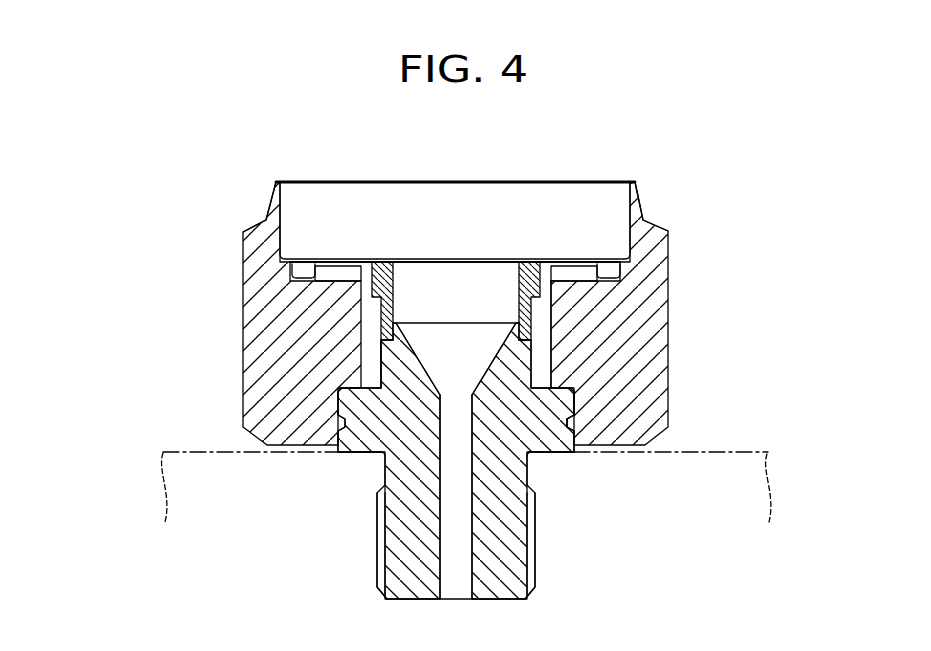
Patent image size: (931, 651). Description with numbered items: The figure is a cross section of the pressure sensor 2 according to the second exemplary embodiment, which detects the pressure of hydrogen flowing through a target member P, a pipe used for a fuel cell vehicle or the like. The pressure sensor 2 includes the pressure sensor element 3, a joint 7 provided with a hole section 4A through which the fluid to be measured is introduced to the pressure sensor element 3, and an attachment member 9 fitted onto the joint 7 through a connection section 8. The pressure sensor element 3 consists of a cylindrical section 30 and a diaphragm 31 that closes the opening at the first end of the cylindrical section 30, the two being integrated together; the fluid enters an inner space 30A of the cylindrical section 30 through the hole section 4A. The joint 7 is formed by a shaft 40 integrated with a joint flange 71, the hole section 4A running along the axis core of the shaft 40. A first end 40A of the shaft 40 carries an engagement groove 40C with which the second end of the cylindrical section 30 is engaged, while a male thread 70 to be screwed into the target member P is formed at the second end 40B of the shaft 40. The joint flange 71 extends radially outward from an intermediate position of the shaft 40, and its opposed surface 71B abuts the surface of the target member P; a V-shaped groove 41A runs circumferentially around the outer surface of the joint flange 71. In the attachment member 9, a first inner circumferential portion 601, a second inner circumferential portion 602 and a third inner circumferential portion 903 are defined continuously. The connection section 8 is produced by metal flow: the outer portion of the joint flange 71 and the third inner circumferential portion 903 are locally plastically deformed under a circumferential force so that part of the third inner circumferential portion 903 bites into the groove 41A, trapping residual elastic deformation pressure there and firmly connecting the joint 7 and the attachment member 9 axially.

The pressure sensor 2 is at (704, 158).
The attachment member 9 is at (210, 232).
The first inner circumferential portion 601 is at (618, 205).
The pressure sensor element 3 is at (522, 221).
The inner space 30A is at (392, 278).
The diaphragm 31 is at (456, 262).
The cylindrical section 30 is at (523, 295).
The second inner circumferential portion 602 is at (546, 306).
The engagement groove 40C is at (383, 336).
The first end of the shaft 40A is at (407, 373).
The V-shaped groove 41A is at (576, 418).
The target member P is at (746, 453).
The connection section 8 is at (576, 430).
The third inner circumferential portion 903 is at (549, 441).
The opposed surface 71B is at (354, 456).
The joint flange 71 is at (550, 437).
The joint 7 is at (628, 500).
The shaft 40 is at (520, 535).
The male thread 70 is at (378, 579).
The second end of the shaft 40B is at (520, 575).
The hole section 4A is at (440, 557).